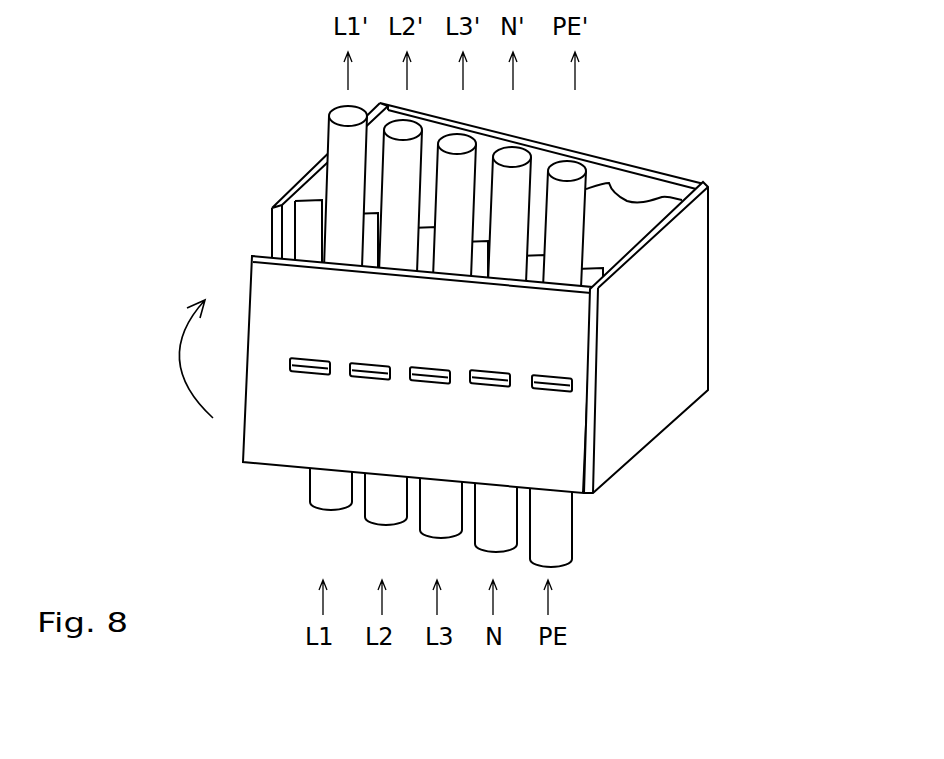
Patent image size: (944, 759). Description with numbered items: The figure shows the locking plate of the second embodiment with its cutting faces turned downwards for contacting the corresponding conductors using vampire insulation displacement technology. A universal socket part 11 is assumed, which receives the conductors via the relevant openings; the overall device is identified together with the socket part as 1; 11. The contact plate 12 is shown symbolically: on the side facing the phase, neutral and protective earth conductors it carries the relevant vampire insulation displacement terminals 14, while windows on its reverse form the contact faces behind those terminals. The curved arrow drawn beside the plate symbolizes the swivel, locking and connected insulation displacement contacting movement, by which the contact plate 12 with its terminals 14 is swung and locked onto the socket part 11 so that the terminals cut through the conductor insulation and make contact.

The plug connector 1 is at (569, 335).
The universal socket part 11 is at (708, 328).
The contact plate 12 is at (537, 354).
The vampire insulation displacement terminals 14 is at (555, 393).